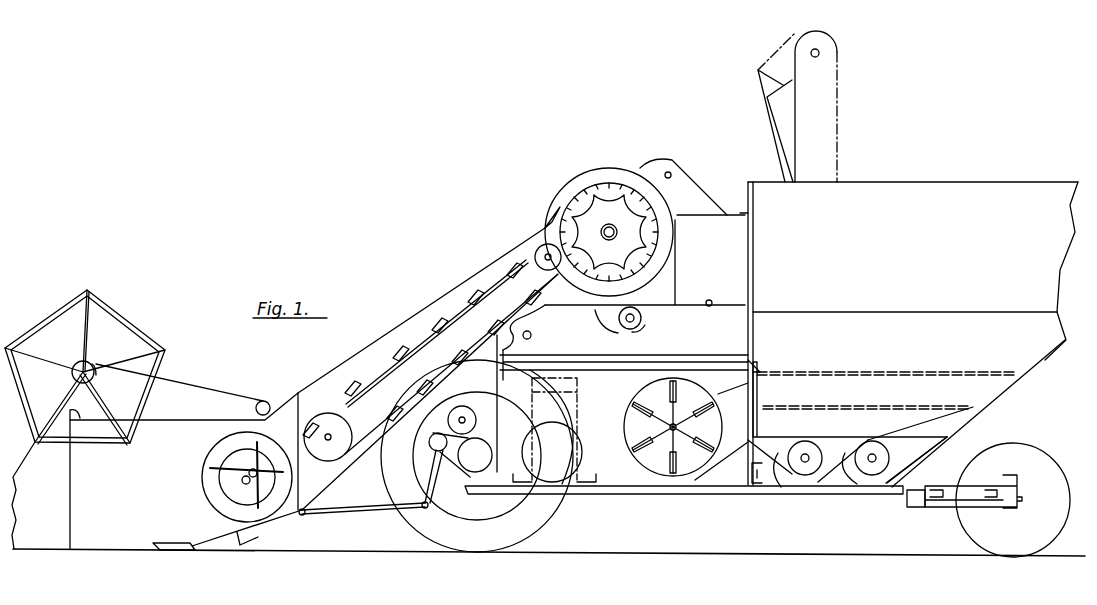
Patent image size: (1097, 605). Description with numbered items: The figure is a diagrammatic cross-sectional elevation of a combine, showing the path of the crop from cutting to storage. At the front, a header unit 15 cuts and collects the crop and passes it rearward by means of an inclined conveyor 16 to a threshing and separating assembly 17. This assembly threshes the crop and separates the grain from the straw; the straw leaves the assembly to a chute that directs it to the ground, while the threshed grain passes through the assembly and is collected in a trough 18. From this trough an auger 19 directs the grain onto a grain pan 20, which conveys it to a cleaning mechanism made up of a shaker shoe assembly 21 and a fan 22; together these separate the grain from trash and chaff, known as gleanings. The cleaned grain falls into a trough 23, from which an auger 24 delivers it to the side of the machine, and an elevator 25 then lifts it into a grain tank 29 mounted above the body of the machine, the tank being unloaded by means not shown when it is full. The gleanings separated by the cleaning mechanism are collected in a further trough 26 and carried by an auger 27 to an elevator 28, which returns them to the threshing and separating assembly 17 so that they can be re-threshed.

The header unit 15 is at (272, 526).
The conveyor 16 is at (363, 380).
The threshing and separating assembly 17 is at (560, 186).
The trough 18 is at (633, 339).
The auger 19 is at (618, 333).
The grain pan 20 is at (758, 342).
The shaker shoe assembly 21 is at (818, 393).
The fan 22 is at (687, 468).
The trough 23 is at (812, 482).
The auger 24 is at (777, 470).
The elevator 25 is at (828, 162).
The trough 26 is at (875, 482).
The auger 27 is at (888, 478).
The elevator 28 is at (707, 193).
The grain tank 29 is at (890, 188).